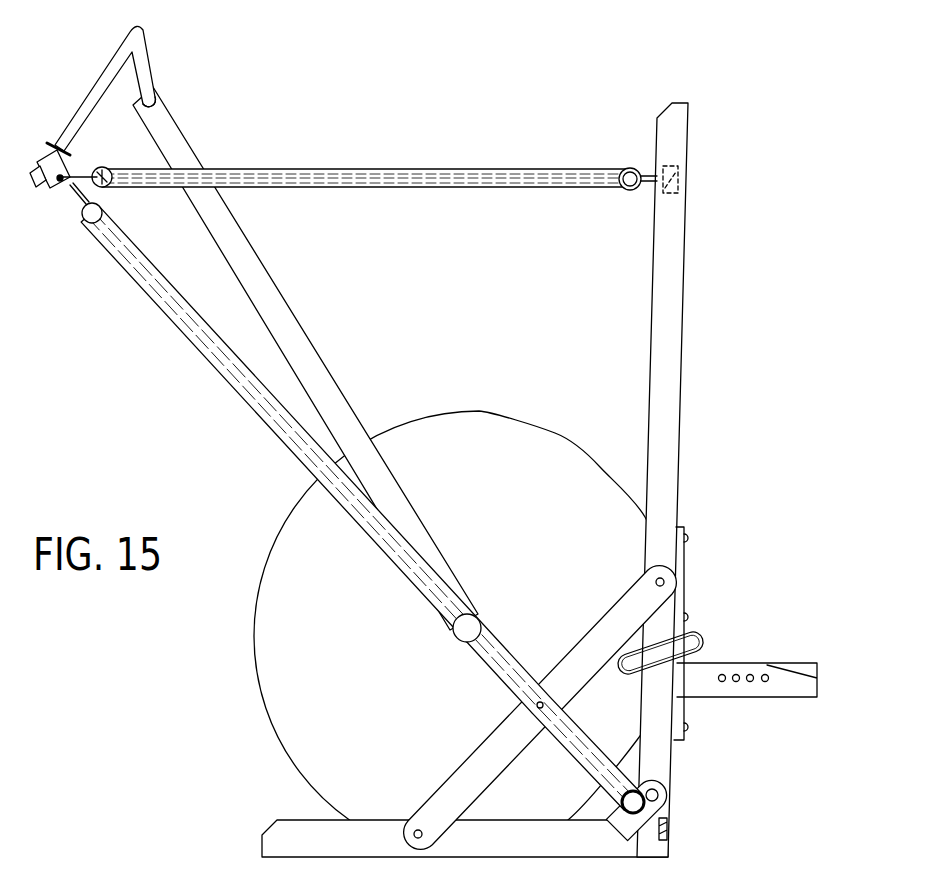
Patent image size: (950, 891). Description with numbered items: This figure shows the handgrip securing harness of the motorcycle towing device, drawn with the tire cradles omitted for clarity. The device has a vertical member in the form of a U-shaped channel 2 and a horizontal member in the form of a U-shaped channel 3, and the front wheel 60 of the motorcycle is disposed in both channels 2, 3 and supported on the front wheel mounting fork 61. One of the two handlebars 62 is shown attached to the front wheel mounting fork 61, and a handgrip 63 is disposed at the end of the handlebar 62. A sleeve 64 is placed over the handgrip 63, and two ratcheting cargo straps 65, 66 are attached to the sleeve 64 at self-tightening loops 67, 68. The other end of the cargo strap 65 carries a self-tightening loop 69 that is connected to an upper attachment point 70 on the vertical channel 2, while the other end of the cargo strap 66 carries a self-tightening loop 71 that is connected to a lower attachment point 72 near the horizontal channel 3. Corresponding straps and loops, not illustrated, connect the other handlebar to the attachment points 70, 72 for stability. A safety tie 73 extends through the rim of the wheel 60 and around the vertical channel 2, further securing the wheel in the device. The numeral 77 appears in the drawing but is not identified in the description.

The vertical member 2 is at (683, 290).
The horizontal member 3 is at (283, 822).
The front wheel 60 is at (520, 432).
The front wheel mounting fork 61 is at (296, 330).
The handlebar 62 is at (148, 58).
The handgrip 63 is at (40, 192).
The sleeve 64 is at (72, 158).
The ratcheting cargo strap 65 is at (355, 168).
The ratcheting cargo strap 66 is at (190, 338).
The self-tightening loop 67 is at (103, 166).
The self-tightening loop 68 is at (104, 207).
The self-tightening loop 69 is at (632, 168).
The upper attachment point 70 is at (676, 175).
The self-tightening loop 71 is at (621, 806).
The lower attachment point 72 is at (668, 828).
The safety tie 73 is at (638, 675).
The arm end 77 is at (146, 95).